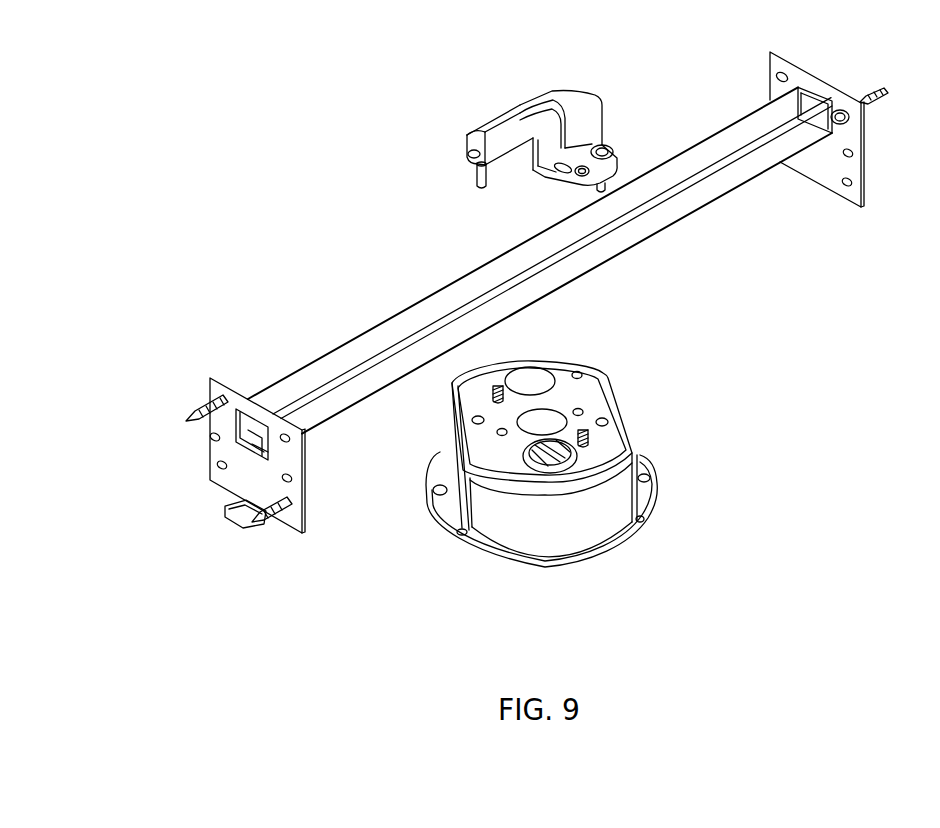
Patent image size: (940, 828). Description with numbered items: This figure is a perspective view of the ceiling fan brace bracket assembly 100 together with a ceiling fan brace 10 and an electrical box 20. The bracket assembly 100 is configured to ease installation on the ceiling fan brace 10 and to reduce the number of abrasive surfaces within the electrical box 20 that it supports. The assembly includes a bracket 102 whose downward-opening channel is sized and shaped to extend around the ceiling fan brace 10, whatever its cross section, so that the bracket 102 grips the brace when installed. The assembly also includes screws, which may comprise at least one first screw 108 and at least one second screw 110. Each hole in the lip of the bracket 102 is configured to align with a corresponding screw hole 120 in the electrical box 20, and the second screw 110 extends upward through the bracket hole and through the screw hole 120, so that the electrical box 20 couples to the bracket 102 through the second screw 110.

The ceiling fan brace bracket assembly 100 is at (423, 122).
The ceiling fan brace 10 is at (407, 325).
The bracket 102 is at (571, 100).
The first screw 108 is at (606, 148).
The electrical box 20 is at (495, 516).
The second screw 110 is at (500, 386).
The screw hole 120 is at (478, 419).